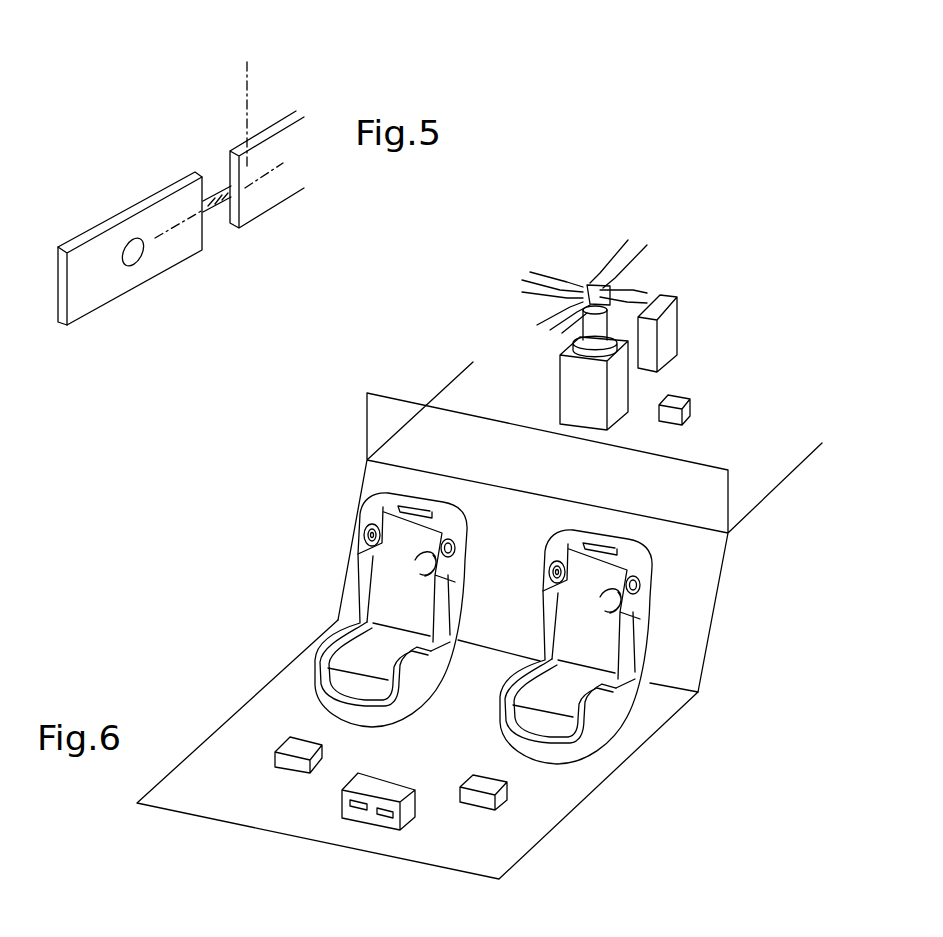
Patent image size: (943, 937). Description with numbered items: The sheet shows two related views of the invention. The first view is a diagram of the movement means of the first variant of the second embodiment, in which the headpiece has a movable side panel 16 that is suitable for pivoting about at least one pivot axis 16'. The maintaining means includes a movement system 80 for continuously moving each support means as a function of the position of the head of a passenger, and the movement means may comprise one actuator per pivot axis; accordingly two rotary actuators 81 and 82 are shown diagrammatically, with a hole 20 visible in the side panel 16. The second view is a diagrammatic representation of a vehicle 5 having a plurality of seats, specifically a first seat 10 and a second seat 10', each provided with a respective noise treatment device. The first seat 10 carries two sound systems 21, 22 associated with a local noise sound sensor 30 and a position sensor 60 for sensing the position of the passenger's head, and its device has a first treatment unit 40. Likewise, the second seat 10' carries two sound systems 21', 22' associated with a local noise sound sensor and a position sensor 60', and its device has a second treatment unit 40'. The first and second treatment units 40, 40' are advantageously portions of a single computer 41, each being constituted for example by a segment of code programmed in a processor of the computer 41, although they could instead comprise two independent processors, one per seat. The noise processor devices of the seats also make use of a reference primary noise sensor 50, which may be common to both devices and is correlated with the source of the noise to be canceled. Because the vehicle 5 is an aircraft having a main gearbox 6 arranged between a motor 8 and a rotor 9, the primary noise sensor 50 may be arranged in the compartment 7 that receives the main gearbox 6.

In FIG. 6, the vehicle 5 is at (210, 656).
In FIG. 6, the main gearbox 6 is at (567, 397).
In FIG. 6, the compartment 7 is at (467, 390).
In FIG. 6, the motor 8 is at (671, 325).
In FIG. 6, the rotor 9 is at (574, 258).
In FIG. 6, the first seat 10 is at (350, 610).
In FIG. 6, the second seat 10' is at (618, 655).
In FIG. 5, the movable side panel 16 is at (117, 285).
In FIG. 5, the pivot axis 16' is at (215, 104).
In FIG. 5, the hole 20 is at (133, 254).
In FIG. 6, the sound system 21 is at (331, 513).
In FIG. 6, the sound system 21' is at (531, 599).
In FIG. 6, the sound system 22 is at (474, 526).
In FIG. 6, the sound system 22' is at (673, 572).
In FIG. 6, the local noise sound sensor 30 is at (416, 562).
In FIG. 6, the first treatment unit 40 is at (379, 778).
In FIG. 6, the second treatment unit 40' is at (355, 847).
In FIG. 6, the computer 41 is at (350, 803).
In FIG. 6, the reference primary noise sensor 50 is at (690, 410).
In FIG. 6, the position sensor 60 is at (265, 765).
In FIG. 6, the position sensor 60' is at (539, 810).
In FIG. 5, the movement system 80 is at (211, 163).
In FIG. 5, the rotary actuator 81 is at (216, 228).
In FIG. 5, the rotary actuator 82 is at (261, 117).